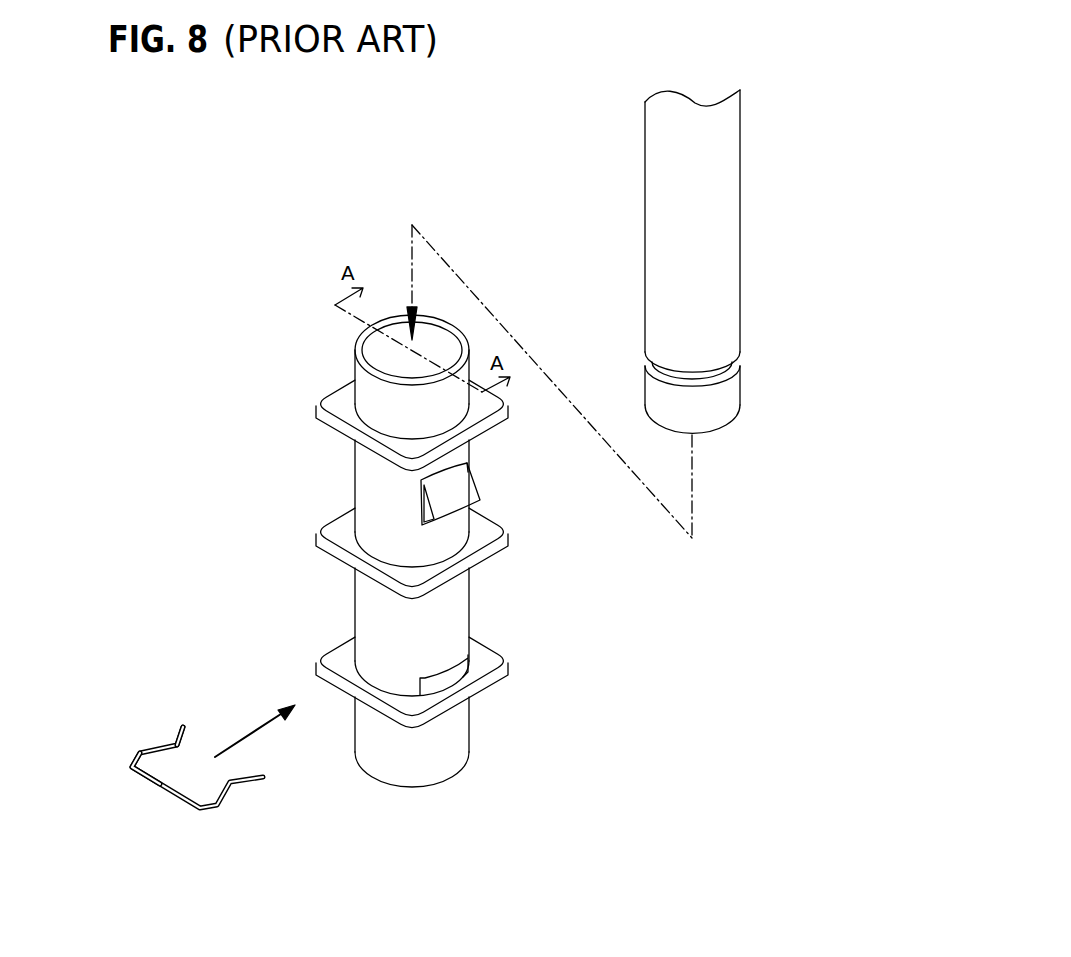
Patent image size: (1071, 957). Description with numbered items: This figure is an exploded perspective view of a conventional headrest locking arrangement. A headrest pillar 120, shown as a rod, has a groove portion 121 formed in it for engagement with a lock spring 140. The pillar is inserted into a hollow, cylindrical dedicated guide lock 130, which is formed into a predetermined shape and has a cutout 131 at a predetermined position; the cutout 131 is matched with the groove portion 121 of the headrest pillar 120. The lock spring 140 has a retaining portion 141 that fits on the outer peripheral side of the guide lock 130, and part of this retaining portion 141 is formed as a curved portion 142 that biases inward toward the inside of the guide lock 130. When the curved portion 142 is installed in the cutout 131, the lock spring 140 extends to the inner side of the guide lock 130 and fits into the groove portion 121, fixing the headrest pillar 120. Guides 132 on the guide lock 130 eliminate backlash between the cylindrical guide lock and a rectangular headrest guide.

The headrest pillar 120 is at (752, 225).
The groove portion 121 is at (740, 362).
The guide lock 130 is at (250, 422).
The cutout 131 is at (508, 660).
The guide 132 is at (483, 430).
The lock spring 140 is at (240, 802).
The retaining portion 141 is at (145, 747).
The curved portion 142 is at (173, 730).